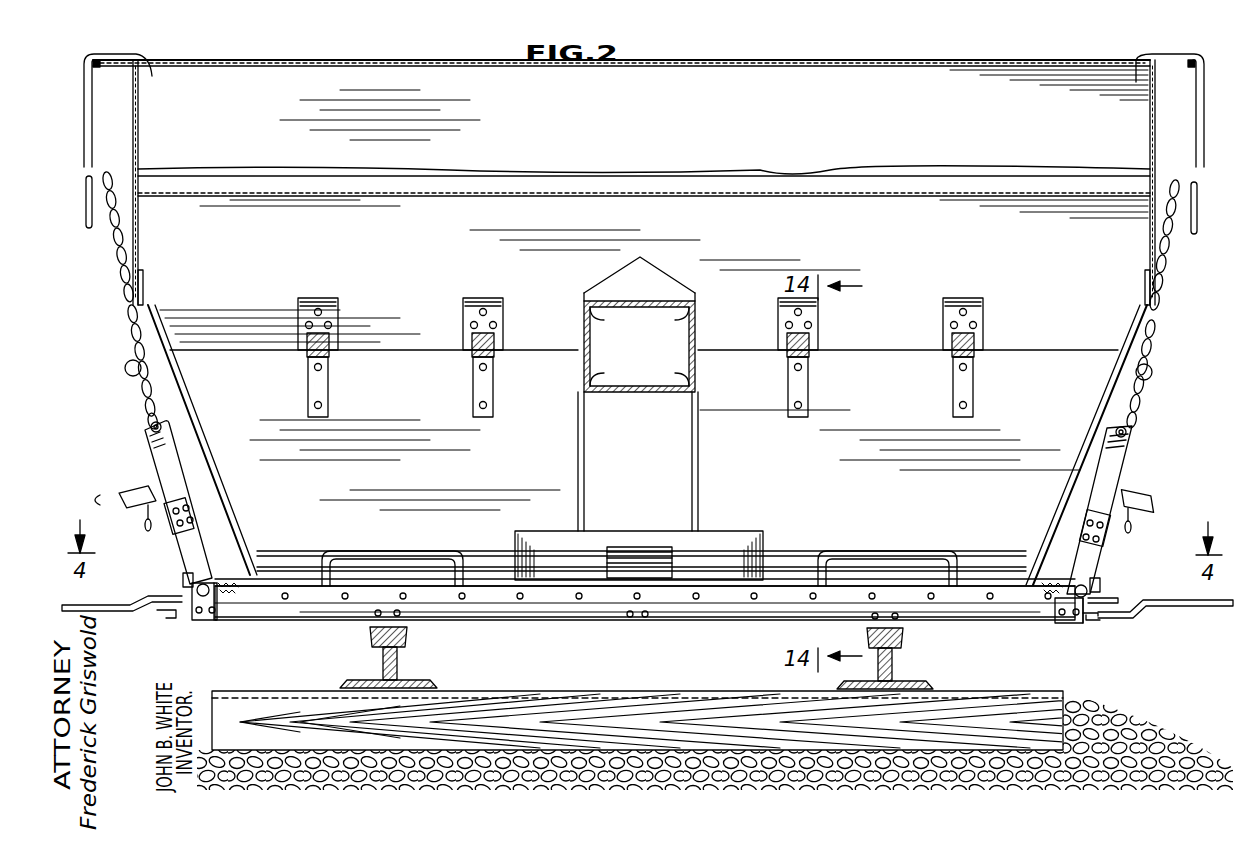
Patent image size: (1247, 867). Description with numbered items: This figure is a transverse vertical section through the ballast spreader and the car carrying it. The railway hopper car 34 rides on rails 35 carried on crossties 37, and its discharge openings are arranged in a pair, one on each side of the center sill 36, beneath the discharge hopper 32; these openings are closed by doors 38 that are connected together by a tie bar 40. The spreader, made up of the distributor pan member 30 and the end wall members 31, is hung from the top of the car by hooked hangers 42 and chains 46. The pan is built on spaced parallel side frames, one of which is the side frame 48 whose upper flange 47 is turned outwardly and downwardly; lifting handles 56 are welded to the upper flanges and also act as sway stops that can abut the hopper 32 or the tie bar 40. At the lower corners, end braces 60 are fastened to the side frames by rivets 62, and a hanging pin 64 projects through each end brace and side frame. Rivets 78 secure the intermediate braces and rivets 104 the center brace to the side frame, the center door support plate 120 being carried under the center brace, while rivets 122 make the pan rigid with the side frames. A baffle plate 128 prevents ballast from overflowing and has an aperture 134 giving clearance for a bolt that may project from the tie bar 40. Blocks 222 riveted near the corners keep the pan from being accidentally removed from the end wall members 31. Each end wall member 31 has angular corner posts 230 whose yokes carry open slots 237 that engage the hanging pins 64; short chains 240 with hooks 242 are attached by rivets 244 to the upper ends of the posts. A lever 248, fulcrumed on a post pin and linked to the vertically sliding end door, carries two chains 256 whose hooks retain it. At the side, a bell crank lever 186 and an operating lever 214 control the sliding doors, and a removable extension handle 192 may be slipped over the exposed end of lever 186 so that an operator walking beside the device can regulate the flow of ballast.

The distributor pan member 30 is at (482, 628).
The end wall member 31 is at (148, 466).
The discharge hopper 32 is at (1094, 291).
The railway hopper car 34 is at (858, 82).
The rail 35 is at (392, 660).
The center sill 36 is at (652, 386).
The crosstie 37 is at (978, 694).
The door 38 is at (411, 356).
The tie bar 40 is at (1005, 558).
The hooked hanger 42 is at (90, 120).
The chain 46 is at (113, 233).
The upper flange 47 is at (1040, 585).
The side frame 48 is at (955, 620).
The lifting handle 56 is at (400, 550).
The end brace 60 is at (208, 618).
The rivet 62 is at (214, 620).
The hanging pin 64 is at (205, 584).
The rivet 78 is at (395, 610).
The rivet 104 is at (643, 618).
The center door support plate 120 is at (285, 600).
The rivet 122 is at (752, 600).
The baffle plate 128 is at (725, 540).
The aperture 134 is at (670, 571).
The bell crank lever 186 is at (165, 618).
The removable extension handle 192 is at (107, 605).
The operating lever 214 is at (1112, 600).
The block 222 is at (232, 590).
The corner post 230 is at (158, 450).
The open slot 237 is at (183, 580).
The chain 240 is at (140, 402).
The hook 242 is at (128, 362).
The rivet 244 is at (150, 425).
The lever 248 is at (140, 498).
The chain 256 is at (145, 528).